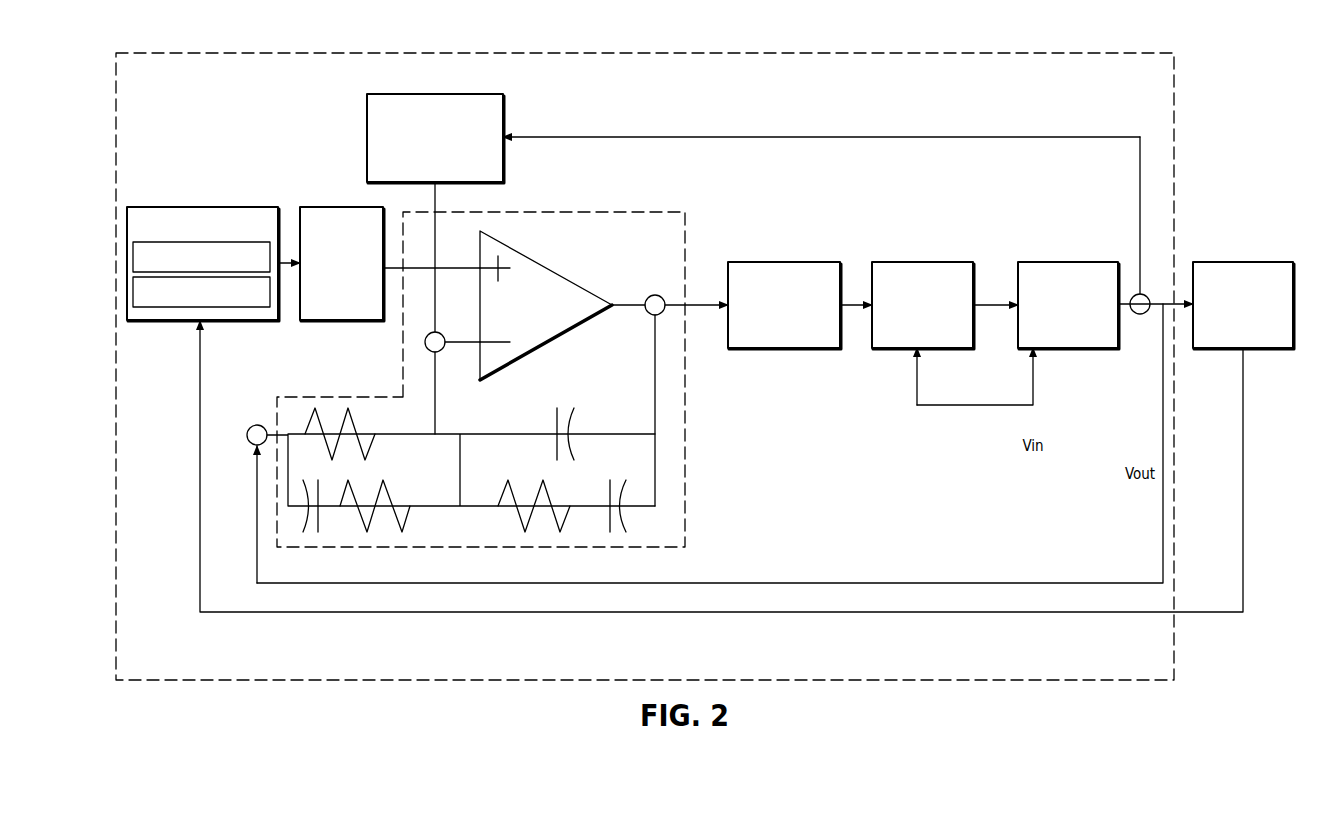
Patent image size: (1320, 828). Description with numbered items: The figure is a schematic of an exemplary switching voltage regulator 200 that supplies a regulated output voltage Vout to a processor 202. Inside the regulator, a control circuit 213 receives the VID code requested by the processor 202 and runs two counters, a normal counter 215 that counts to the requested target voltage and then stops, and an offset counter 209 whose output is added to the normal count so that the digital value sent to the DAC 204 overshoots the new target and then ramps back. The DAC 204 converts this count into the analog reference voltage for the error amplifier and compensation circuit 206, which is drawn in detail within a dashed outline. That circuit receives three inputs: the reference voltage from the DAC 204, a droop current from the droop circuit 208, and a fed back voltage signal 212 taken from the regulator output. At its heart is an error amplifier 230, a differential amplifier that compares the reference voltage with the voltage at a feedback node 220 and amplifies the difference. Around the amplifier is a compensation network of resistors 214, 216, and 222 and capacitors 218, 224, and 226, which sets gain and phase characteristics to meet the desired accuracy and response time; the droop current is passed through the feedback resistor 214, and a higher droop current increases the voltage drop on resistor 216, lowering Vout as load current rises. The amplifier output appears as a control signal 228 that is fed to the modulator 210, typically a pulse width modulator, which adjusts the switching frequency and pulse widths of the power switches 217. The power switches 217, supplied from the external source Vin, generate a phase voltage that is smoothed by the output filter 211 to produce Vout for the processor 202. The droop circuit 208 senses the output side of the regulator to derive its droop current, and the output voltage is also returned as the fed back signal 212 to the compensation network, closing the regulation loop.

The switching voltage regulator 200 is at (1174, 115).
The processor 202 is at (1250, 262).
The DAC 204 is at (327, 207).
The error amplifier and compensation circuit 206 is at (685, 212).
The droop circuit 208 is at (367, 105).
The offset counter 209 is at (133, 215).
The modulator 210 is at (790, 262).
The output filter 211 is at (1068, 348).
The fed back voltage signal 212 is at (257, 424).
The control circuit 213 is at (245, 207).
The feedback resistor 214 is at (355, 532).
The normal counter 215 is at (178, 307).
The resistor 216 is at (315, 408).
The power switches 217 is at (950, 348).
The capacitor 218 is at (305, 532).
The feedback node 220 is at (438, 354).
The resistor 222 is at (518, 532).
The capacitor 224 is at (615, 532).
The capacitor 226 is at (569, 408).
The control signal 228 is at (648, 313).
The error amplifier 230 is at (550, 268).